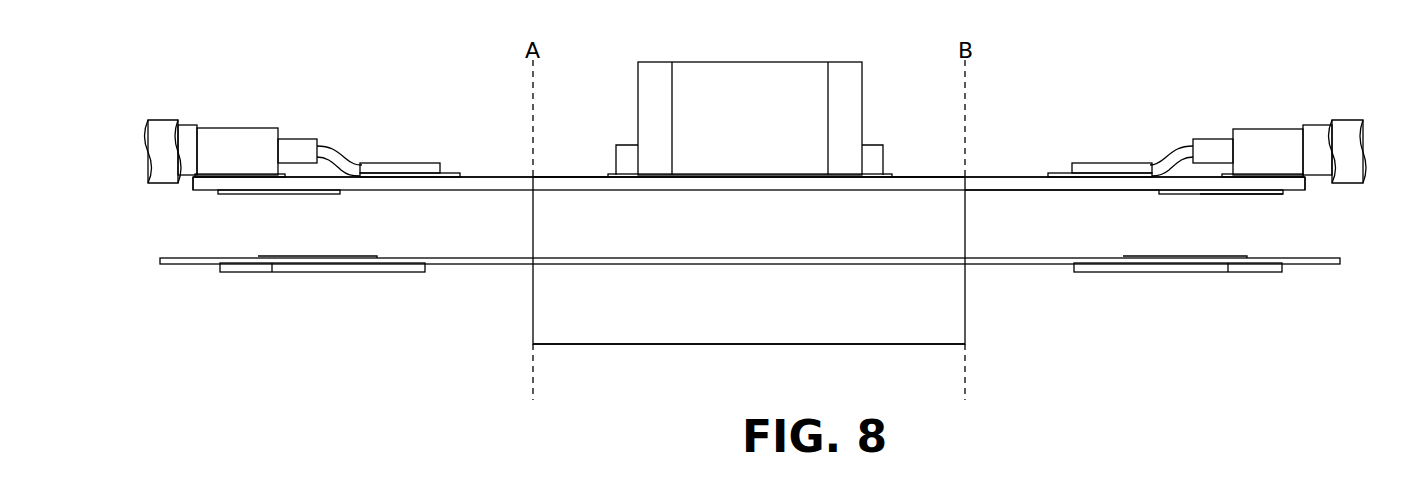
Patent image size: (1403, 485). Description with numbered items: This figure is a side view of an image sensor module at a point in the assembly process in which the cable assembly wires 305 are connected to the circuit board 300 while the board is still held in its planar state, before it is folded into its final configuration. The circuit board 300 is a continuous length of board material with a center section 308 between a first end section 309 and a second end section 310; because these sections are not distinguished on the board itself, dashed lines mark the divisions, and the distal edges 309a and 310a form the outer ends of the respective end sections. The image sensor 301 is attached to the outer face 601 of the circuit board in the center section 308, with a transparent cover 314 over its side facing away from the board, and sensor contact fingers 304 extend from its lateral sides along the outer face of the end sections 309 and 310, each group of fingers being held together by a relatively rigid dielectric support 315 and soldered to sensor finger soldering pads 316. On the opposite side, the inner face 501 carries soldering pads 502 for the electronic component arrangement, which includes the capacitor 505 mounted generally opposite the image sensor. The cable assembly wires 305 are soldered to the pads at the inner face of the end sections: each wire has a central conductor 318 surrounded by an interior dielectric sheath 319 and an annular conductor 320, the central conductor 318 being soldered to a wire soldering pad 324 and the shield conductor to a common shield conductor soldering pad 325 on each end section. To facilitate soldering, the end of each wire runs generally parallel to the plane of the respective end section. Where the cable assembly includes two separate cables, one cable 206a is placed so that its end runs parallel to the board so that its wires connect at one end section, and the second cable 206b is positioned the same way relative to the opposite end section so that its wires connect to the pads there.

The cable 206a is at (1350, 125).
The second cable 206b is at (162, 124).
The circuit board 300 is at (1001, 166).
The image sensor 301 is at (730, 228).
The sensor contact fingers 304 is at (190, 266).
The cable assembly wires 305 is at (190, 135).
The center section 308 is at (918, 182).
The first end section 309 is at (1168, 196).
The distal edge of first end section 309a is at (1308, 187).
The second end section 310 is at (513, 183).
The distal edge of second end section 310a is at (190, 185).
The transparent cover 314 is at (843, 333).
The dielectric support 315 is at (340, 273).
The sensor finger soldering pads 316 is at (330, 196).
The central conductor 318 is at (370, 170).
The interior dielectric sheath 319 is at (295, 148).
The annular conductor 320 is at (230, 140).
The wire soldering pads 324 is at (447, 174).
The shield conductor soldering pad 325 is at (240, 178).
The inner face 501 is at (572, 176).
The soldering pads 502 is at (611, 172).
The capacitor 505 is at (751, 80).
The outer face 601 is at (1050, 193).